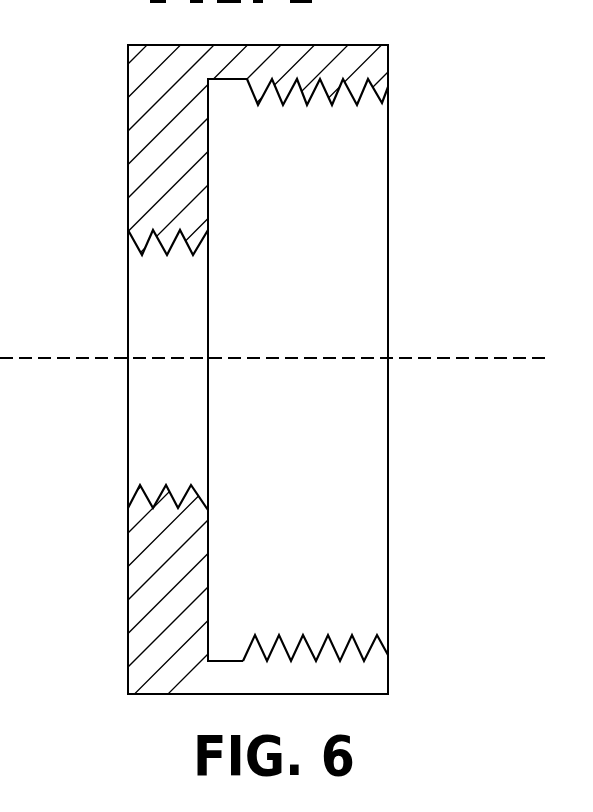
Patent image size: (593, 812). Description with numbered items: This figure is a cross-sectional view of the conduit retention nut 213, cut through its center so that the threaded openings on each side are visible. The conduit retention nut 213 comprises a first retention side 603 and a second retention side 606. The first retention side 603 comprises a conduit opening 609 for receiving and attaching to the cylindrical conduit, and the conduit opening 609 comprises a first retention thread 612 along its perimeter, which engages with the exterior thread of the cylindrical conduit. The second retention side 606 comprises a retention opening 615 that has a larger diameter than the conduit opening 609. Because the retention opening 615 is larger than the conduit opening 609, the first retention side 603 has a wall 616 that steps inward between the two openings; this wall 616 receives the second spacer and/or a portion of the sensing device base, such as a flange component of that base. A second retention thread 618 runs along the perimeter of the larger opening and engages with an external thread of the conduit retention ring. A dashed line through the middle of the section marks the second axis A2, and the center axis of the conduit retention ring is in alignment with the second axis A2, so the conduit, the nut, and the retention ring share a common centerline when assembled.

The conduit retention nut 213 is at (448, 30).
The second retention thread 618 is at (385, 86).
The wall 616 is at (200, 175).
The retention opening 615 is at (408, 266).
The conduit opening 609 is at (94, 300).
The first retention thread 612 is at (140, 500).
The first retention side 603 is at (128, 620).
The second retention side 606 is at (390, 678).
The second axis A2 is at (478, 360).